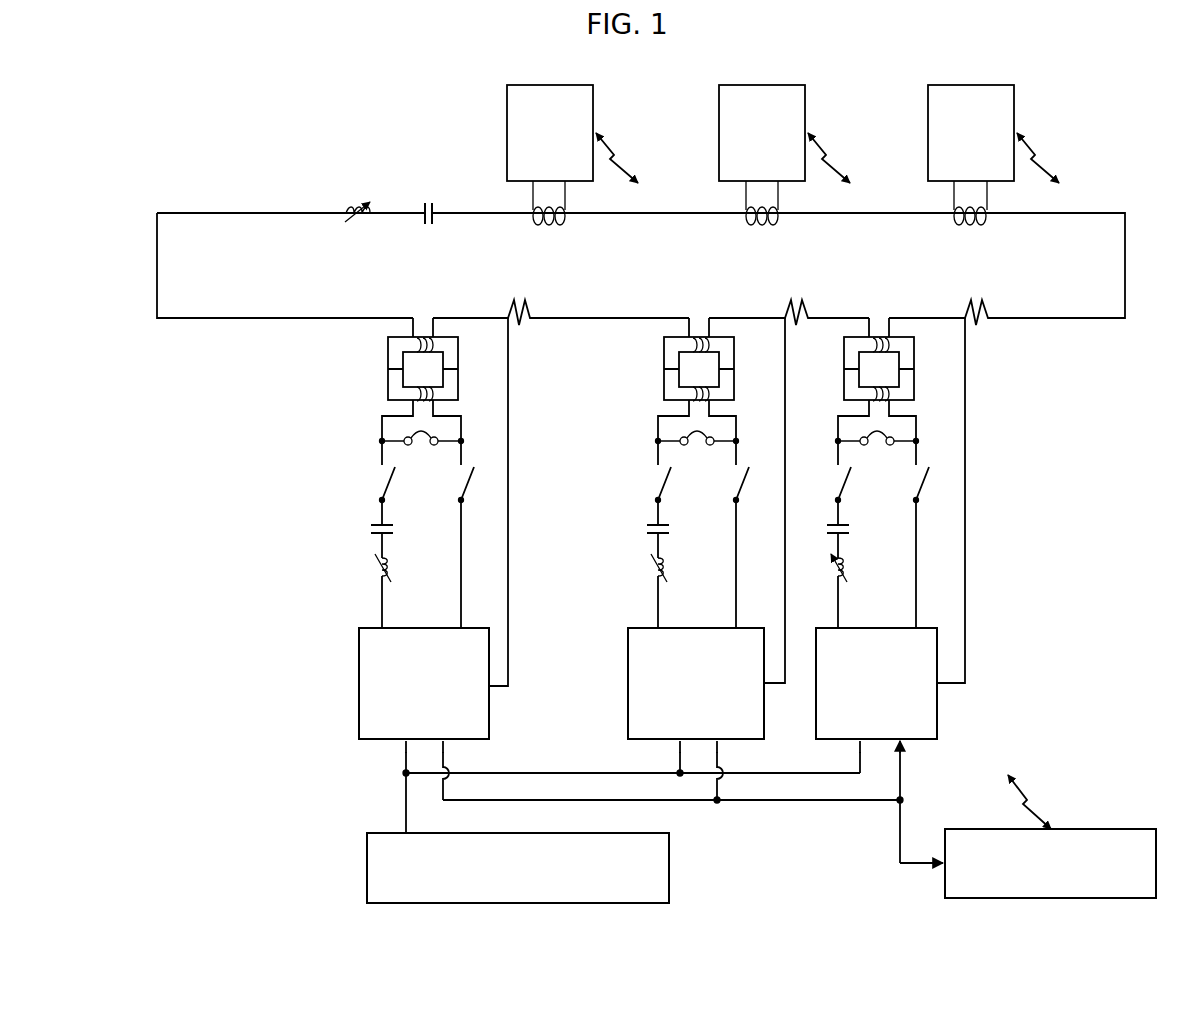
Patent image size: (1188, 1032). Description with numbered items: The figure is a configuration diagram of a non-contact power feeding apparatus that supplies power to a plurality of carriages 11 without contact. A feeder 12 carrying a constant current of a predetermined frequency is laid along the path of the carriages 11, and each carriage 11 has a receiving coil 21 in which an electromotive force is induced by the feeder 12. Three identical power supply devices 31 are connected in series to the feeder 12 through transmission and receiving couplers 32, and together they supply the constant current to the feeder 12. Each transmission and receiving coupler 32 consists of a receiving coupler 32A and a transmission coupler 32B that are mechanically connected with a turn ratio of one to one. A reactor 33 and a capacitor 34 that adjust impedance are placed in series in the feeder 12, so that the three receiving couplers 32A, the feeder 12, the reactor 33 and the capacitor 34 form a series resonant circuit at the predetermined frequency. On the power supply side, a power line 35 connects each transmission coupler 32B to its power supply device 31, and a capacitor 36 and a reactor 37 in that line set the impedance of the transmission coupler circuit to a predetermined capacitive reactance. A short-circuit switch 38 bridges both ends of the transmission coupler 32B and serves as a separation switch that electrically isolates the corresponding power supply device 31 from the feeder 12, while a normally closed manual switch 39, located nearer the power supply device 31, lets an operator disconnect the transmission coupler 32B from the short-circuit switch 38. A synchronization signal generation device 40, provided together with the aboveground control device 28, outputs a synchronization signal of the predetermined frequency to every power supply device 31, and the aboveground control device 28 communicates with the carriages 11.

The carriage 11 is at (507, 113).
The feeder 12 is at (205, 213).
The receiving coil 21 is at (550, 226).
The aboveground control device 28 is at (1127, 829).
The power supply device 31 is at (359, 640).
The transmission and receiving coupler 32 is at (600, 391).
The receiving coupler 32A is at (400, 360).
The transmission coupler 32B is at (400, 378).
The reactor 33 is at (357, 208).
The capacitor 34 is at (428, 203).
The power line 35 is at (379, 445).
The capacitor 36 is at (371, 529).
The reactor 37 is at (372, 567).
The short-circuit switch 38 is at (670, 547).
The manual switch 39 is at (380, 482).
The synchronization signal generation device 40 is at (367, 855).